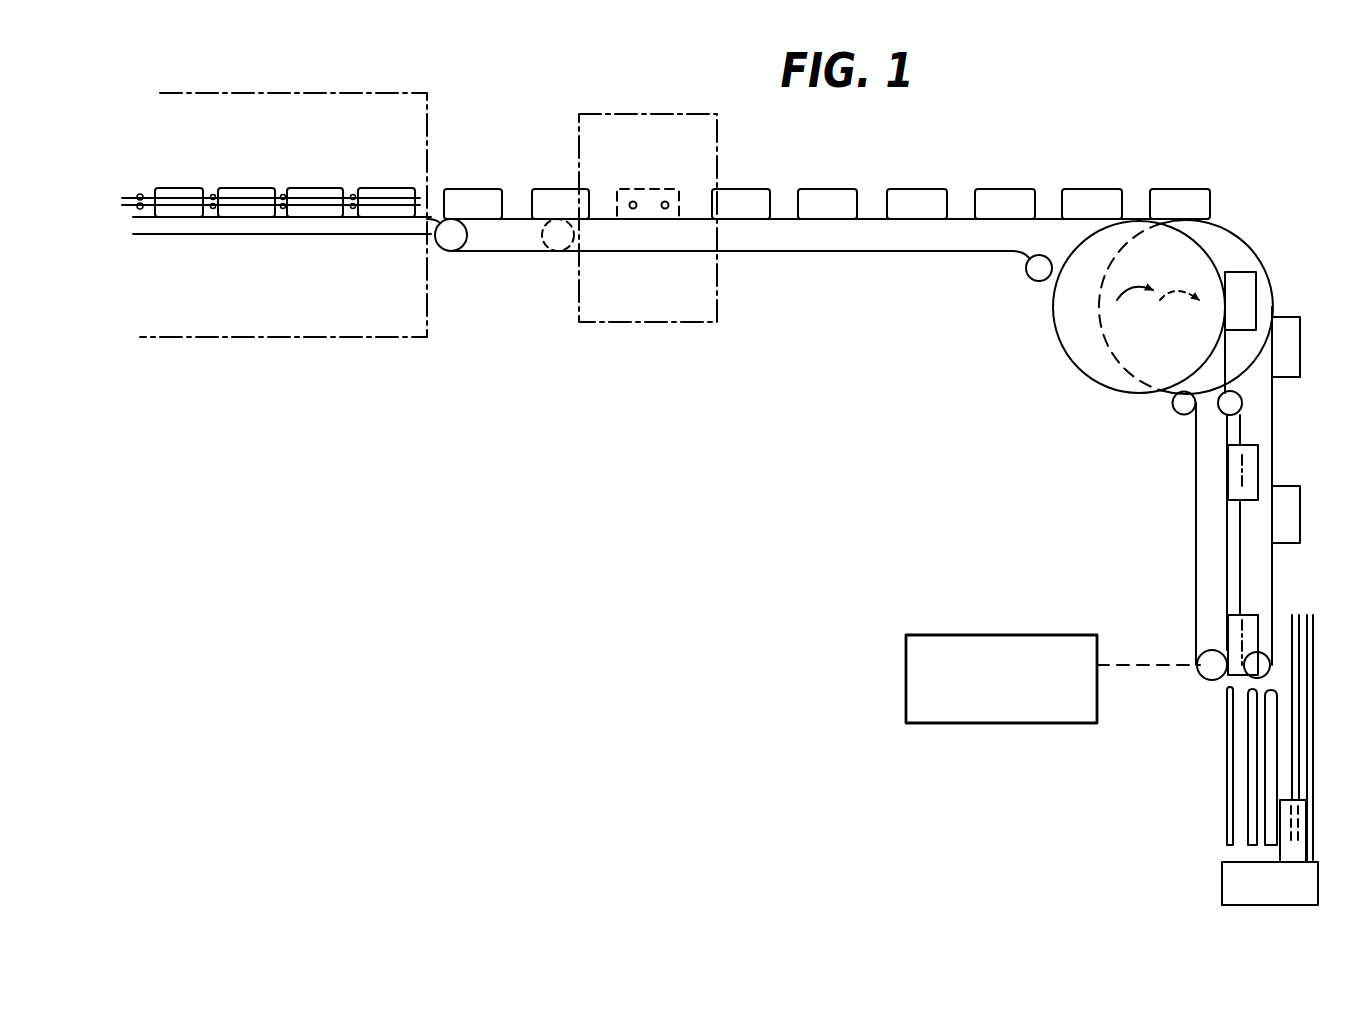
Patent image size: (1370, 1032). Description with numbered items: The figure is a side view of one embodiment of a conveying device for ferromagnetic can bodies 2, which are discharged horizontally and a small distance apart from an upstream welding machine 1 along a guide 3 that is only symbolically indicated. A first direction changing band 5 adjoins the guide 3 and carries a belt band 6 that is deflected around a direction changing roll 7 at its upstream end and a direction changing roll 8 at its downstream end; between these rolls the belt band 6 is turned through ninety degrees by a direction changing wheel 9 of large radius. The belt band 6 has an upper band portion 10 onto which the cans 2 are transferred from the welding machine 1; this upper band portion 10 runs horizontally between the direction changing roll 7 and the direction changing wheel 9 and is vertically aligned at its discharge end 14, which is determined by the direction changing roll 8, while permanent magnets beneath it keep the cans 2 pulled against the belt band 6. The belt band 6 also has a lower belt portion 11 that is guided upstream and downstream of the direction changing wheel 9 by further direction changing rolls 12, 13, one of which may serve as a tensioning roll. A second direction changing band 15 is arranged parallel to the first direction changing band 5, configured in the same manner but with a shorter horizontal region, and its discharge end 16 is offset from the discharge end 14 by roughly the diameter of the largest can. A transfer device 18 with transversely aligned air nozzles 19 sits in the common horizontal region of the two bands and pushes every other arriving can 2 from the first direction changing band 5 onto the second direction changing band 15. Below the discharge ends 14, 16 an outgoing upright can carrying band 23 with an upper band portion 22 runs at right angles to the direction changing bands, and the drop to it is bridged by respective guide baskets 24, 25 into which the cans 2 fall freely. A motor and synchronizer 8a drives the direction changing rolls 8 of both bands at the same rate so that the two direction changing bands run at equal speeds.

The welding machine 1 is at (199, 324).
The can bodies 2 is at (244, 191).
The guide 3 is at (309, 228).
The first direction changing band 5 is at (497, 240).
The belt band 6 is at (467, 257).
The direction changing roll 7 is at (437, 237).
The direction changing roll 8 is at (1200, 657).
The motor and synchronizer 8a is at (966, 633).
The direction changing wheel 9 is at (1068, 346).
The upper band portion 10 is at (515, 217).
The lower belt portion 11 is at (535, 255).
The direction changing roll 12 is at (1177, 401).
The direction changing roll 13 is at (1032, 267).
The discharge end 14 is at (1237, 624).
The second direction changing band 15 is at (1245, 237).
The discharge end 16 is at (1278, 607).
The transfer device 18 is at (638, 322).
The air nozzles 19 is at (666, 202).
The upper band portion 22 is at (1237, 860).
The upright can carrying band 23 is at (1251, 765).
The guide basket 24 is at (1238, 760).
The guide basket 25 is at (1312, 768).